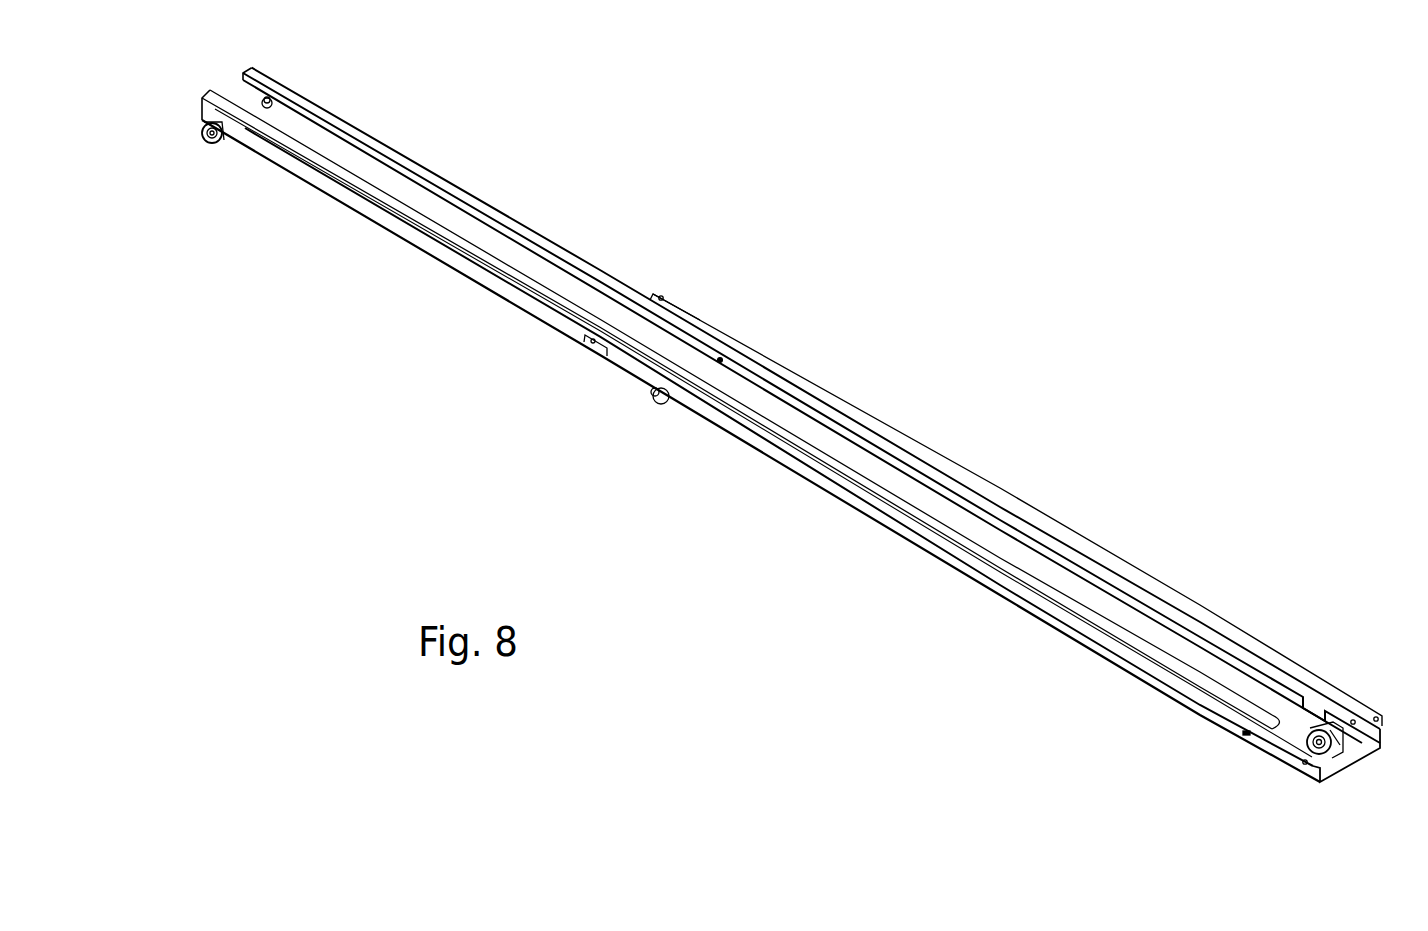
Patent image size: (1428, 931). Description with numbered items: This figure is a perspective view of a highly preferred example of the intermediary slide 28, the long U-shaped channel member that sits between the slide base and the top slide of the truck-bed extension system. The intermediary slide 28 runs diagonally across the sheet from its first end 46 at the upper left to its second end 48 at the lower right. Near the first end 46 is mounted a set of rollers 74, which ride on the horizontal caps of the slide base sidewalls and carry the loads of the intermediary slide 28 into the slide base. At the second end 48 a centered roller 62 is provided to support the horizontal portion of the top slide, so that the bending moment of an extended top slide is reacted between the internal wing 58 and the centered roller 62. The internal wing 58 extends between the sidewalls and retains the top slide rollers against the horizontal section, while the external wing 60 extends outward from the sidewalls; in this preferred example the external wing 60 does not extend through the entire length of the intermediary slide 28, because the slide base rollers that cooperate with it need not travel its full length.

The intermediary slide 28 is at (473, 284).
The first end 46 is at (278, 83).
The second end 48 is at (1288, 659).
The internal wing 58 is at (475, 218).
The external wing 60 is at (706, 318).
The centered roller 62 is at (1328, 756).
The rollers 74 is at (222, 143).